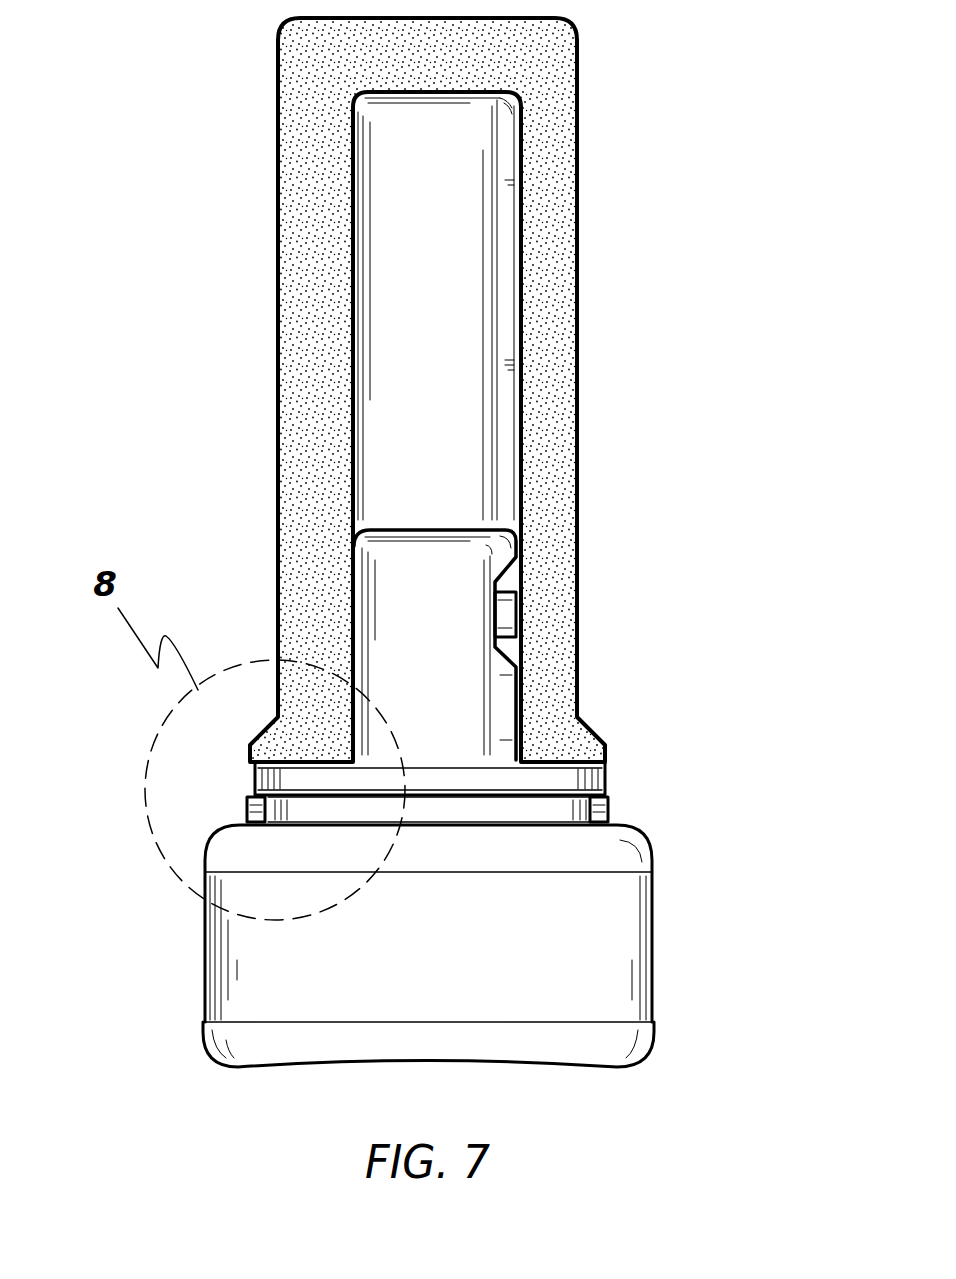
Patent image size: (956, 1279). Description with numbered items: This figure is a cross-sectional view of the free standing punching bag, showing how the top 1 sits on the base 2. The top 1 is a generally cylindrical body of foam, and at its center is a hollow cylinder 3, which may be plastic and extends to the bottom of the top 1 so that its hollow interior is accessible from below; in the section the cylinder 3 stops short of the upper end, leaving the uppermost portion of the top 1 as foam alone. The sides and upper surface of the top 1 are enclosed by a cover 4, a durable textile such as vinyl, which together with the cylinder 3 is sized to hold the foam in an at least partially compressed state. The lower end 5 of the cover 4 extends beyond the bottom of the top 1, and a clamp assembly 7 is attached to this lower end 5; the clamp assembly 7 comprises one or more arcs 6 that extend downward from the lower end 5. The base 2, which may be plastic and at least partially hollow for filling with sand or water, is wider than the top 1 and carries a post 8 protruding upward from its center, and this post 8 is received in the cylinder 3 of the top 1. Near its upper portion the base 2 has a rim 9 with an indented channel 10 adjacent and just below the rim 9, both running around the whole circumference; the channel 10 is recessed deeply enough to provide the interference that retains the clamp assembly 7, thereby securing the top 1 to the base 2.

The top 1 is at (552, 342).
The base 2 is at (590, 938).
The hollow cylinder 3 is at (462, 425).
The cover 4 is at (578, 483).
The lower end 5 is at (607, 775).
The arc 6 is at (608, 808).
The clamp assembly 7 is at (232, 802).
The post 8 is at (387, 577).
The rim 9 is at (307, 777).
The indented channel 10 is at (308, 808).